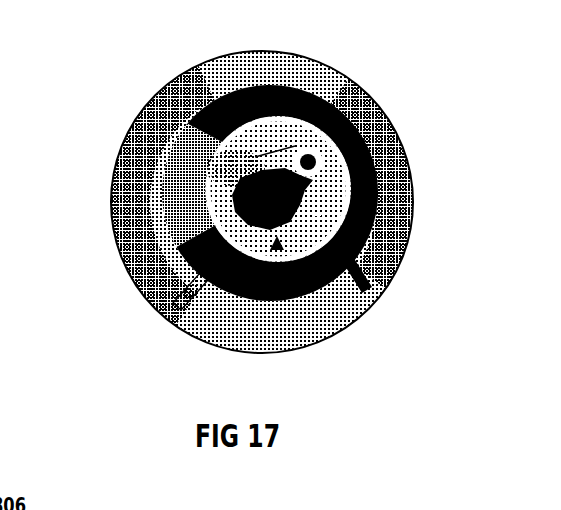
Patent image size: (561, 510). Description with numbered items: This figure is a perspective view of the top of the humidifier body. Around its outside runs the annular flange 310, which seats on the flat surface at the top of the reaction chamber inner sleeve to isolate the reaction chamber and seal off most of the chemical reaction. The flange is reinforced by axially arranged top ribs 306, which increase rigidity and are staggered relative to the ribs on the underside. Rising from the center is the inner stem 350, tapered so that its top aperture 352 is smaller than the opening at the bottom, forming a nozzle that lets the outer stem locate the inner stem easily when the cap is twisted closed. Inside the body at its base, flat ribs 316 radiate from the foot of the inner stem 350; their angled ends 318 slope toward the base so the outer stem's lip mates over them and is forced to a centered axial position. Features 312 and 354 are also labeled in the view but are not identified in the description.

The top ribs 306 is at (370, 261).
The annular flange 310 is at (420, 141).
The feed tube 312 is at (220, 240).
The flat ribs 316 is at (235, 156).
The ends 318 is at (287, 283).
The inner stem 350 is at (315, 195).
The top aperture 352 is at (330, 162).
The chamber 354 is at (200, 203).